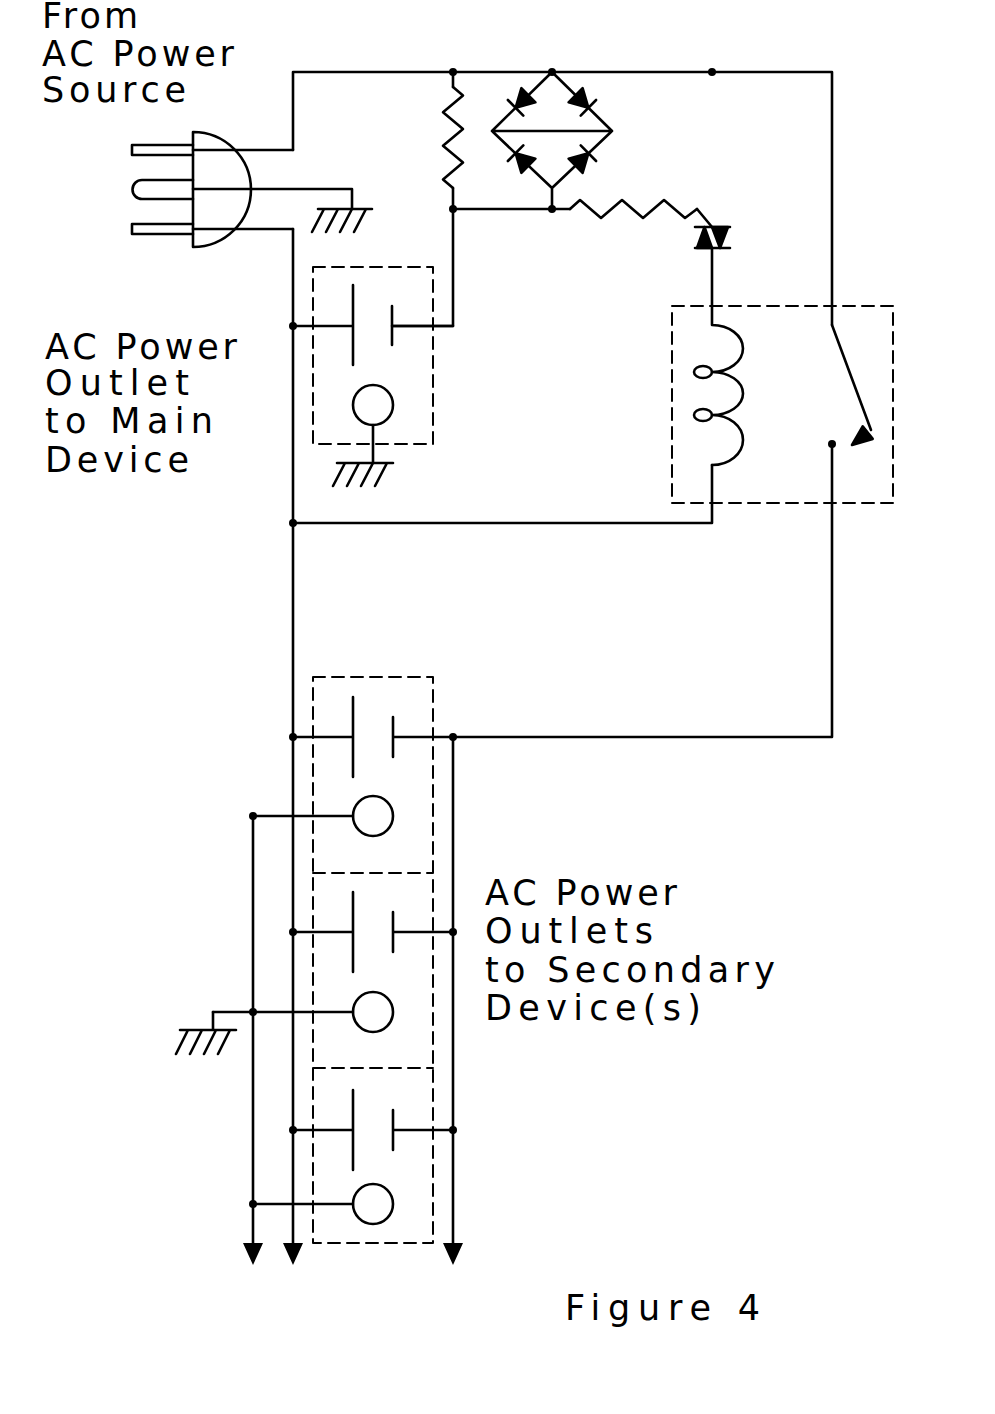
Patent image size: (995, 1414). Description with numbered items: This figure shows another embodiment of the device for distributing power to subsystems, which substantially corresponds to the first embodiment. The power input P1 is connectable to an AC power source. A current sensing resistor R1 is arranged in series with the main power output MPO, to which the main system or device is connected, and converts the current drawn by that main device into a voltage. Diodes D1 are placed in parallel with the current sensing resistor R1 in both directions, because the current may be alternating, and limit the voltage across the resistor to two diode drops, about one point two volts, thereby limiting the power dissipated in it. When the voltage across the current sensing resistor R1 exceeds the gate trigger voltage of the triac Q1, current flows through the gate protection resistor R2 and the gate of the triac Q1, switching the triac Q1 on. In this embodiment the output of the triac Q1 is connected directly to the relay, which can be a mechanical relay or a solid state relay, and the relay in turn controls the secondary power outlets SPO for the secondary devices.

The power input P1 is at (156, 189).
The current sensing resistor R1 is at (423, 137).
The diodes D1 is at (581, 140).
The gate protection resistor R2 is at (633, 235).
The triac Q1 is at (742, 247).
The main power output MPO is at (404, 365).
The secondary power outlets SPO is at (385, 960).